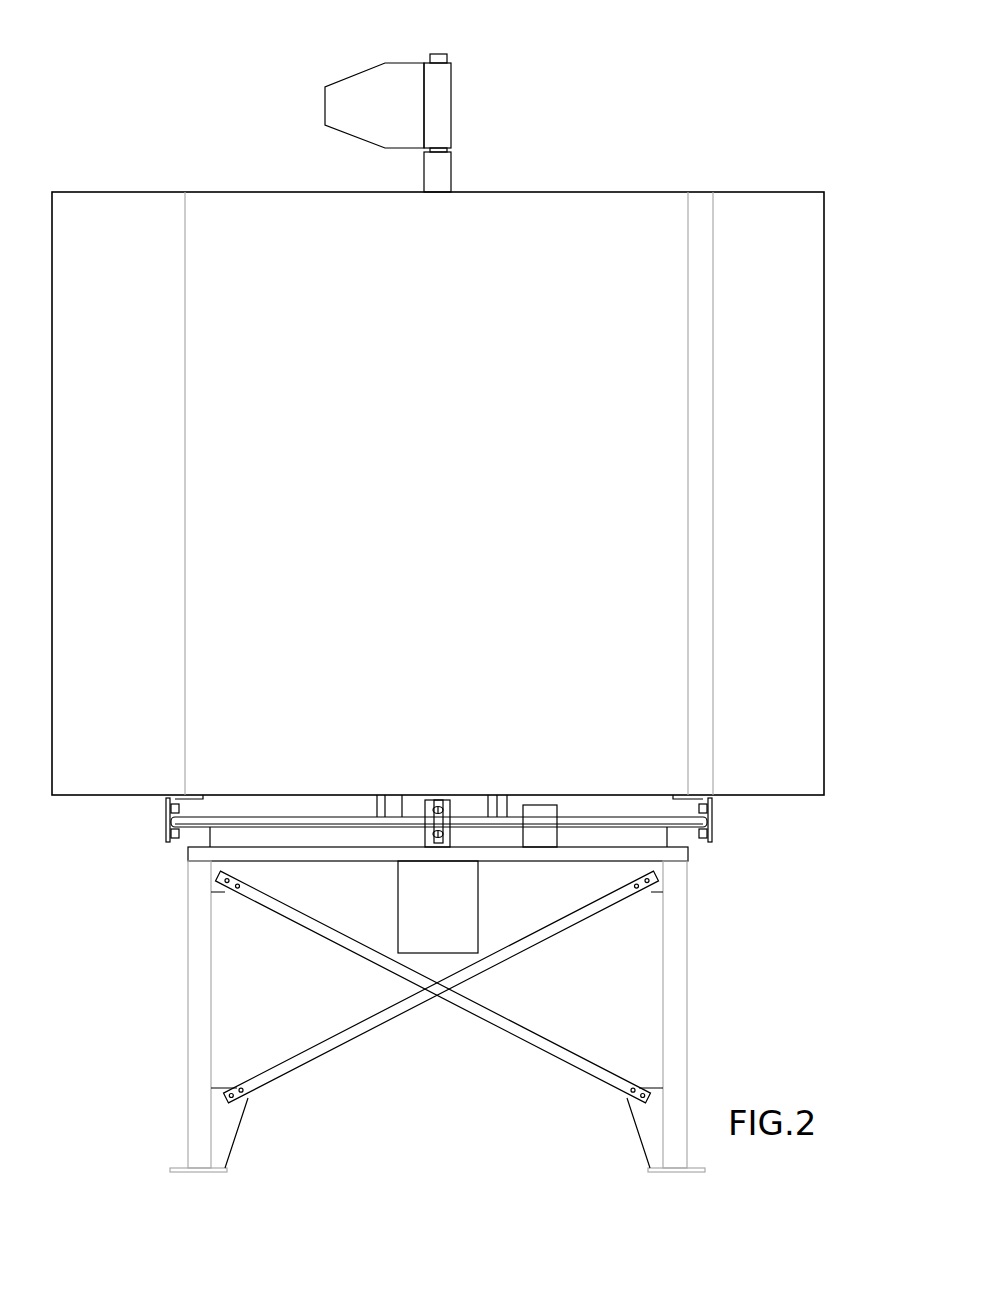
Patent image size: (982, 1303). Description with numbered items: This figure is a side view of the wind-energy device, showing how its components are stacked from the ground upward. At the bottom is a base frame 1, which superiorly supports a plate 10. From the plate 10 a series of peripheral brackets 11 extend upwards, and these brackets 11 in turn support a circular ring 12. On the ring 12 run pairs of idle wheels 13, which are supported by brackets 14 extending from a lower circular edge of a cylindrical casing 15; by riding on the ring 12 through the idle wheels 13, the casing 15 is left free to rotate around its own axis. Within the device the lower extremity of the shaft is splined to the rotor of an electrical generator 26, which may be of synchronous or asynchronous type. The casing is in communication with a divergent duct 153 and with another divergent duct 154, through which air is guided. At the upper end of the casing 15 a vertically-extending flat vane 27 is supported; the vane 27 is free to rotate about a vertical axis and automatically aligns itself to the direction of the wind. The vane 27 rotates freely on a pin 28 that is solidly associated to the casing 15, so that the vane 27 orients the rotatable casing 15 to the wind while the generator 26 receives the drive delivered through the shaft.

The support frame 1 is at (197, 1043).
The frame top plate 10 is at (272, 852).
The L-shaped bracket 11 is at (215, 838).
The transverse bar 12 is at (313, 822).
The side mounting plate 13 is at (177, 805).
The fastener 14 is at (165, 822).
The housing center section 15 is at (456, 435).
The housing right section 153 is at (796, 435).
The housing left section 154 is at (130, 432).
The control box 26 is at (456, 925).
The drive motor 27 is at (360, 98).
The drive shaft 28 is at (438, 54).